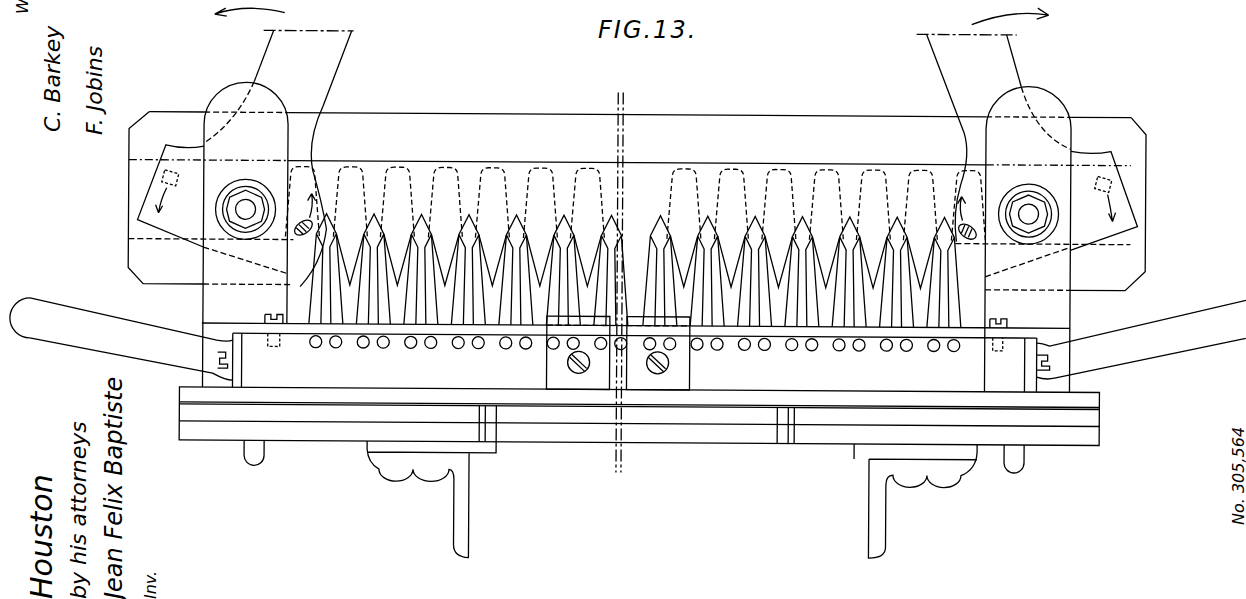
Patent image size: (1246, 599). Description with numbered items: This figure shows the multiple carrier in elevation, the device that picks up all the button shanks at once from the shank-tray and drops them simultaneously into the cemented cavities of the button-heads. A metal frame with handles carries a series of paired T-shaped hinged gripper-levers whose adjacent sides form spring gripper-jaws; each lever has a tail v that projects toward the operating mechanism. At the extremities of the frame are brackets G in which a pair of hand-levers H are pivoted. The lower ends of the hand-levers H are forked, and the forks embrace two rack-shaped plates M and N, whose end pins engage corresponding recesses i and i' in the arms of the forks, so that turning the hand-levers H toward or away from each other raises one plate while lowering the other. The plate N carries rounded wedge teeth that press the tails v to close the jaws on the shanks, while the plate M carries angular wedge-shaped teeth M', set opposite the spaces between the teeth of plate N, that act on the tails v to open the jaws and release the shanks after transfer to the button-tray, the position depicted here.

The hand-lever H is at (637, 147).
The rack-shaped plate N is at (637, 201).
The rack-shaped plate M is at (635, 204).
The angular wedge-shaped teeth M' is at (635, 283).
The tails v is at (647, 261).
The brackets G is at (636, 237).
The recess i is at (636, 224).
The recess i' is at (636, 189).